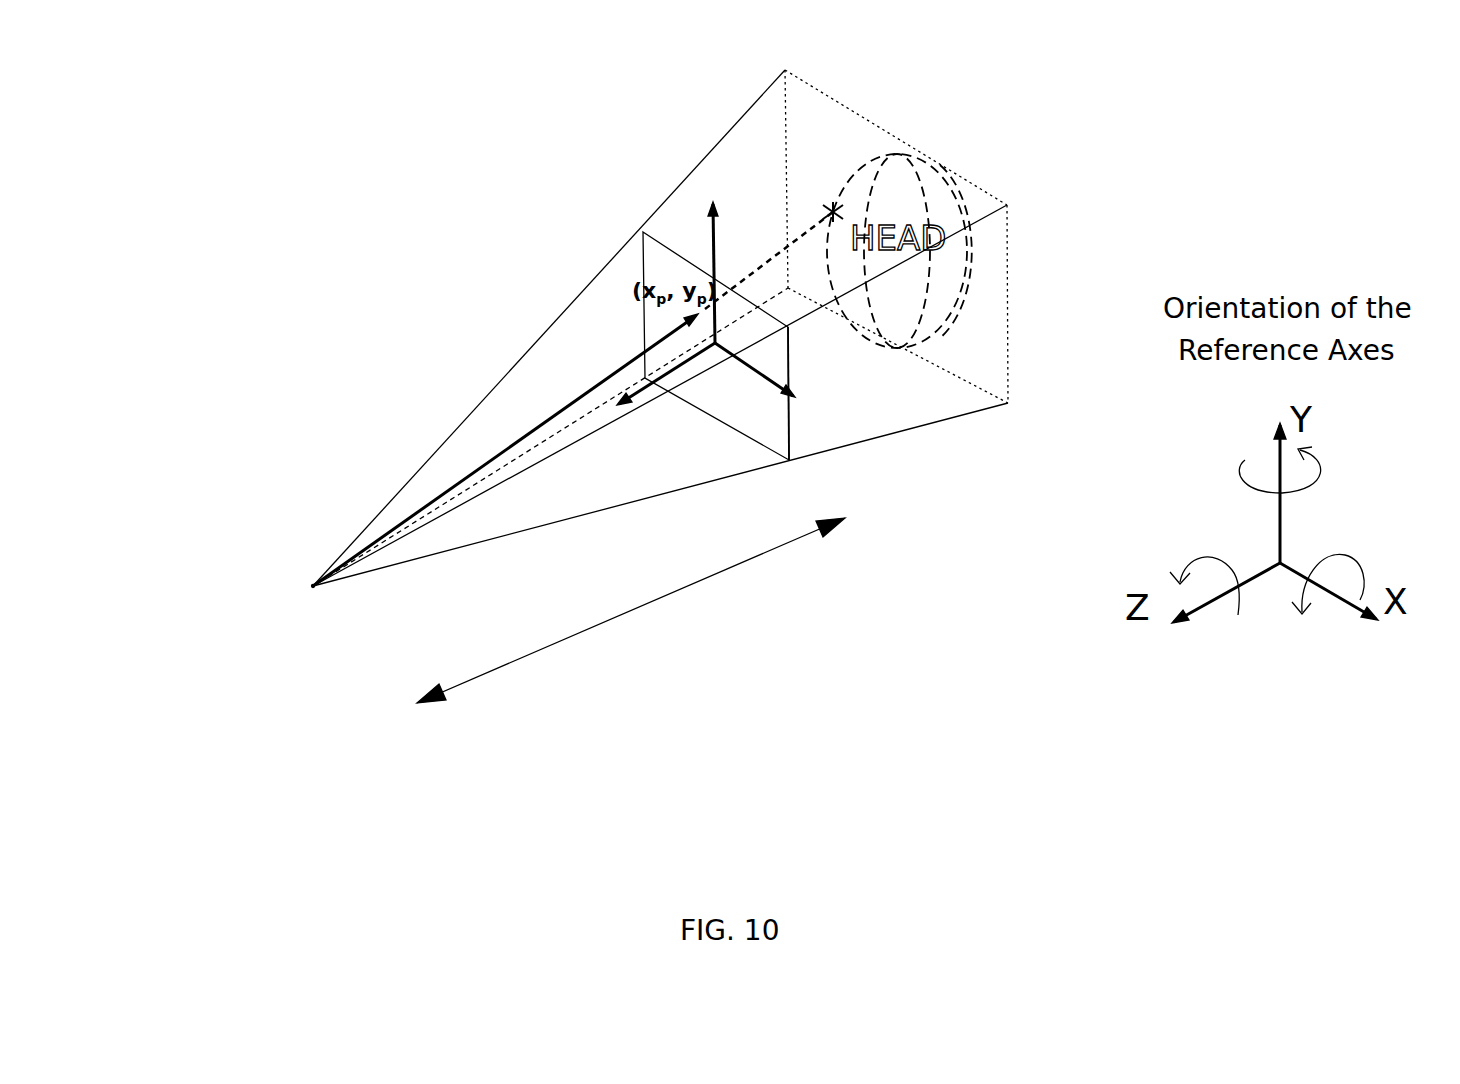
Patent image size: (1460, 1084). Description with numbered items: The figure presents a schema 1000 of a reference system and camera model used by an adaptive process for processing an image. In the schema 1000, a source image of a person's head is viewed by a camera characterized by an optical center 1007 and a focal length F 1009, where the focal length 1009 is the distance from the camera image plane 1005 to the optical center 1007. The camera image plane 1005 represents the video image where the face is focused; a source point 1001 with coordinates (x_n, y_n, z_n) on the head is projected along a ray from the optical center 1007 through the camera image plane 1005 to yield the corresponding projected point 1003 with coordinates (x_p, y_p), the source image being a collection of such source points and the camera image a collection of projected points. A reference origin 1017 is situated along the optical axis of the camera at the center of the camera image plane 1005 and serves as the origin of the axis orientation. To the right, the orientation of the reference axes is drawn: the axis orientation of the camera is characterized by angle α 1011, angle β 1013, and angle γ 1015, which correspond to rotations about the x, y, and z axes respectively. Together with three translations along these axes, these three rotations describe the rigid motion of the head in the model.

The schema 1000 is at (1122, 57).
The source point 1001 is at (818, 213).
The projected point 1003 is at (647, 330).
The camera image plane 1005 is at (783, 420).
The optical center 1007 is at (313, 590).
The focal length 1009 is at (685, 596).
The angle α 1011 is at (1347, 547).
The angle β 1013 is at (1300, 453).
The angle γ 1015 is at (1215, 553).
The reference origin 1017 is at (715, 350).